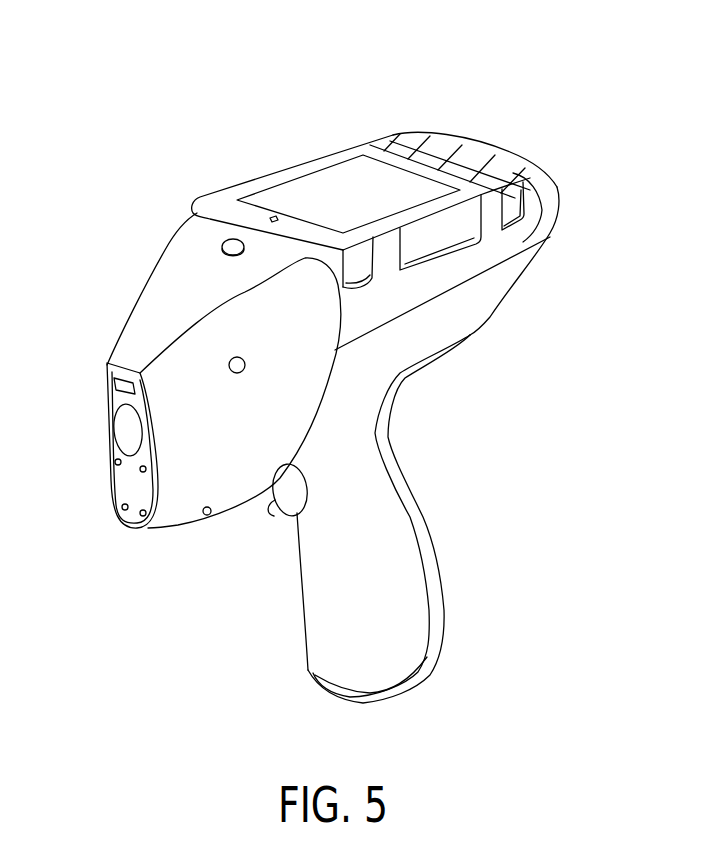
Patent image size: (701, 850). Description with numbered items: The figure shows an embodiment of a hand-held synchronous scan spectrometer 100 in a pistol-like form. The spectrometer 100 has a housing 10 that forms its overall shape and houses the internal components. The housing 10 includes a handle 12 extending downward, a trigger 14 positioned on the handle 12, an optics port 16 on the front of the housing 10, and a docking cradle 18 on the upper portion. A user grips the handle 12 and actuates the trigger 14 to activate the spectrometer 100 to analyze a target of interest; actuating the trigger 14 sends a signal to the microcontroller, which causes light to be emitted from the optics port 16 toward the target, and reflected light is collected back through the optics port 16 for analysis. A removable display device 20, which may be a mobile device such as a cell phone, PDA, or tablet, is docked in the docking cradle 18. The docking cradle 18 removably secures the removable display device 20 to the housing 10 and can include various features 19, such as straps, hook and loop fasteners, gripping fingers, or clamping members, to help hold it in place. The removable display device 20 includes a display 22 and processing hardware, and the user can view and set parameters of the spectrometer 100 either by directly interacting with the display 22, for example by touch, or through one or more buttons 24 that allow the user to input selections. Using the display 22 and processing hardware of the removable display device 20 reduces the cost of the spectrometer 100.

The hand-held synchronous scan spectrometer 100 is at (100, 76).
The housing 10 is at (124, 276).
The handle 12 is at (433, 570).
The trigger 14 is at (269, 510).
The optics port 16 is at (107, 440).
The docking cradle 18 is at (506, 231).
The features 19 is at (498, 210).
The removable display device 20 is at (283, 165).
The display 22 is at (338, 183).
The buttons 24 is at (403, 134).